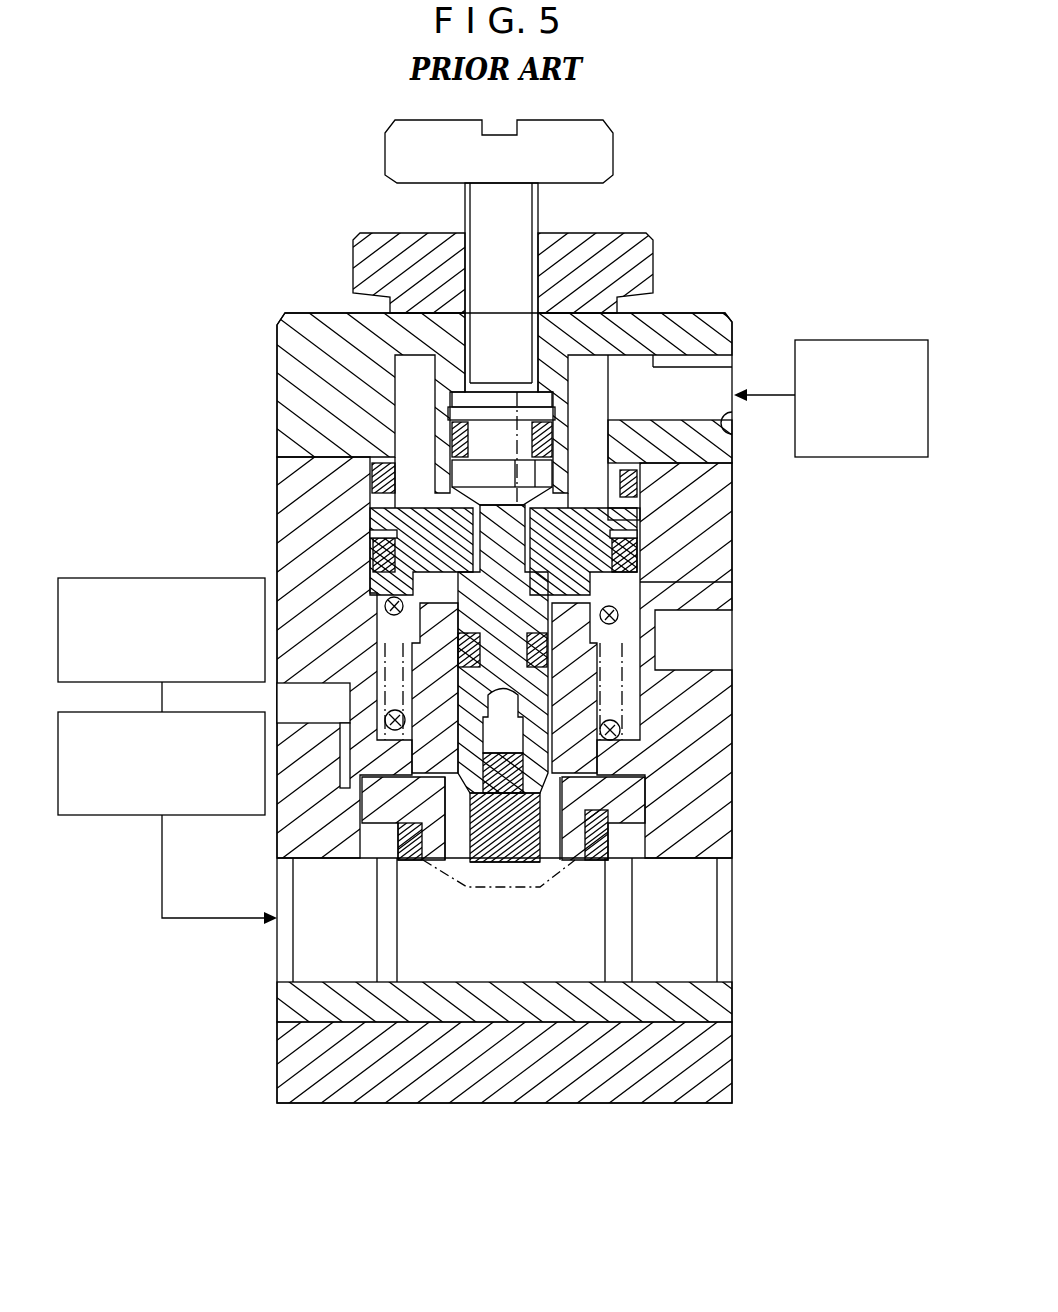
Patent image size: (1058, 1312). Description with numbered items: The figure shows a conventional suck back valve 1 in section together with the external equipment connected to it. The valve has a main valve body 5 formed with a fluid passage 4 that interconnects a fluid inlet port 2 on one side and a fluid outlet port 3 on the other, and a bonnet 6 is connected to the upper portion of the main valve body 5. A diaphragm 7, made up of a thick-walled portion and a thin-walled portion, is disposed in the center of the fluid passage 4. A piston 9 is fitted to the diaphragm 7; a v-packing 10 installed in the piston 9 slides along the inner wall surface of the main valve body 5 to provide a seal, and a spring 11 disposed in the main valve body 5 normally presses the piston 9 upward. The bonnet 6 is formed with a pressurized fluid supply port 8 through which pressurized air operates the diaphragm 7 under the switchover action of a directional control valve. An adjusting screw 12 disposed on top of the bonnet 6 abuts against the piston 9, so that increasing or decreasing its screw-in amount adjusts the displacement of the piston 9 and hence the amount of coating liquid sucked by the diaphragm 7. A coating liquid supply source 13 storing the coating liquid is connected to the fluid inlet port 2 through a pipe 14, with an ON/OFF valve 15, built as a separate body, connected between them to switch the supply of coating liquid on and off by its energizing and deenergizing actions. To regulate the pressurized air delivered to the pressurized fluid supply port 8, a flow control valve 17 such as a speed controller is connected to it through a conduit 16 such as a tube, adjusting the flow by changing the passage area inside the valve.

The suck back valve 1 is at (744, 205).
The fluid inlet port 2 is at (340, 938).
The fluid outlet port 3 is at (683, 937).
The fluid passage 4 is at (432, 972).
The main valve body 5 is at (740, 767).
The bonnet 6 is at (731, 321).
The diaphragm 7 is at (524, 858).
The pressurized fluid supply port 8 is at (733, 420).
The piston 9 is at (530, 600).
The v-packing 10 is at (378, 552).
The spring 11 is at (623, 728).
The adjusting screw 12 is at (517, 212).
The coating liquid supply source 13 is at (80, 577).
The pipe 14 is at (163, 693).
The ON/OFF valve 15 is at (78, 815).
The conduit 16 is at (773, 393).
The flow control valve 17 is at (886, 340).